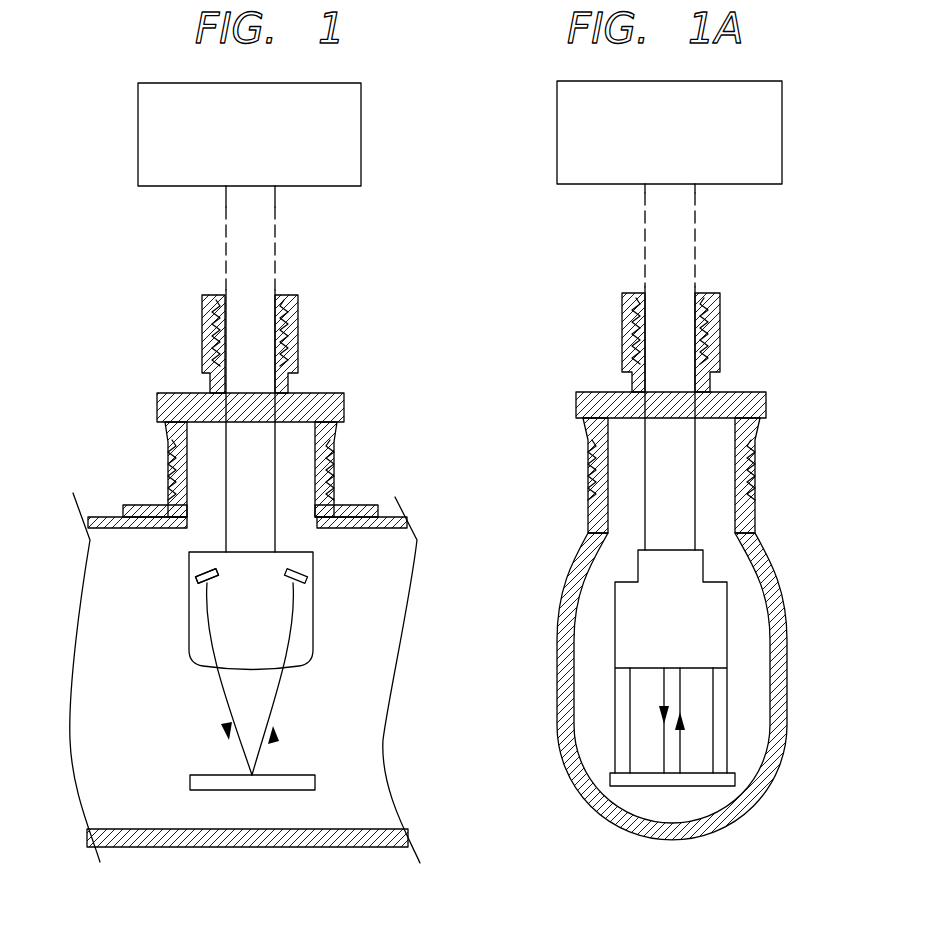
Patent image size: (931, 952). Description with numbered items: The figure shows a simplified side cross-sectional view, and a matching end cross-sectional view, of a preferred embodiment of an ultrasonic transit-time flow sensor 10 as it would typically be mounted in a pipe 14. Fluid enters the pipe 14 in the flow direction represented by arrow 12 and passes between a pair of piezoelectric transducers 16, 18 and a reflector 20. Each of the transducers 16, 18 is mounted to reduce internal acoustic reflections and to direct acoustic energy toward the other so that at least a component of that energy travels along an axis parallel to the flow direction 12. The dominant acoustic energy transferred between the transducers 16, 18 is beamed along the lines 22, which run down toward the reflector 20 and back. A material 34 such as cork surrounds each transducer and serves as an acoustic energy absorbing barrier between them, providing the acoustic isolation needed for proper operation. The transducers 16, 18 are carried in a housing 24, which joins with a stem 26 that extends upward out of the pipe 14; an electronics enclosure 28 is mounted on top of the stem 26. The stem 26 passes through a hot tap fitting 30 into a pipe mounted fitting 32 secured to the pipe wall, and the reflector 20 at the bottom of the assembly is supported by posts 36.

In FIG. 1, the flow sensor 10 is at (147, 317).
In FIG. 1A, the flow sensor 10 is at (773, 318).
In FIG. 1, the arrow 12 is at (175, 722).
In FIG. 1, the pipe 14 is at (288, 847).
In FIG. 1A, the pipe 14 is at (733, 828).
In FIG. 1, the piezoelectric transducer 16 is at (200, 578).
In FIG. 1, the piezoelectric transducer 18 is at (305, 580).
In FIG. 1, the reflector 20 is at (315, 782).
In FIG. 1A, the reflector 20 is at (735, 778).
In FIG. 1, the lines 22 is at (262, 762).
In FIG. 1A, the lines 22 is at (680, 745).
In FIG. 1, the housing 24 is at (313, 557).
In FIG. 1A, the housing 24 is at (705, 568).
In FIG. 1, the stem 26 is at (275, 232).
In FIG. 1A, the stem 26 is at (645, 258).
In FIG. 1, the electronics enclosure 28 is at (361, 136).
In FIG. 1A, the electronics enclosure 28 is at (557, 148).
In FIG. 1, the hot tap fitting 30 is at (344, 398).
In FIG. 1A, the hot tap fitting 30 is at (576, 395).
In FIG. 1, the pipe mounted fitting 32 is at (360, 500).
In FIG. 1A, the pipe mounted fitting 32 is at (588, 516).
In FIG. 1, the material 34 is at (227, 562).
In FIG. 1A, the posts 36 is at (727, 690).